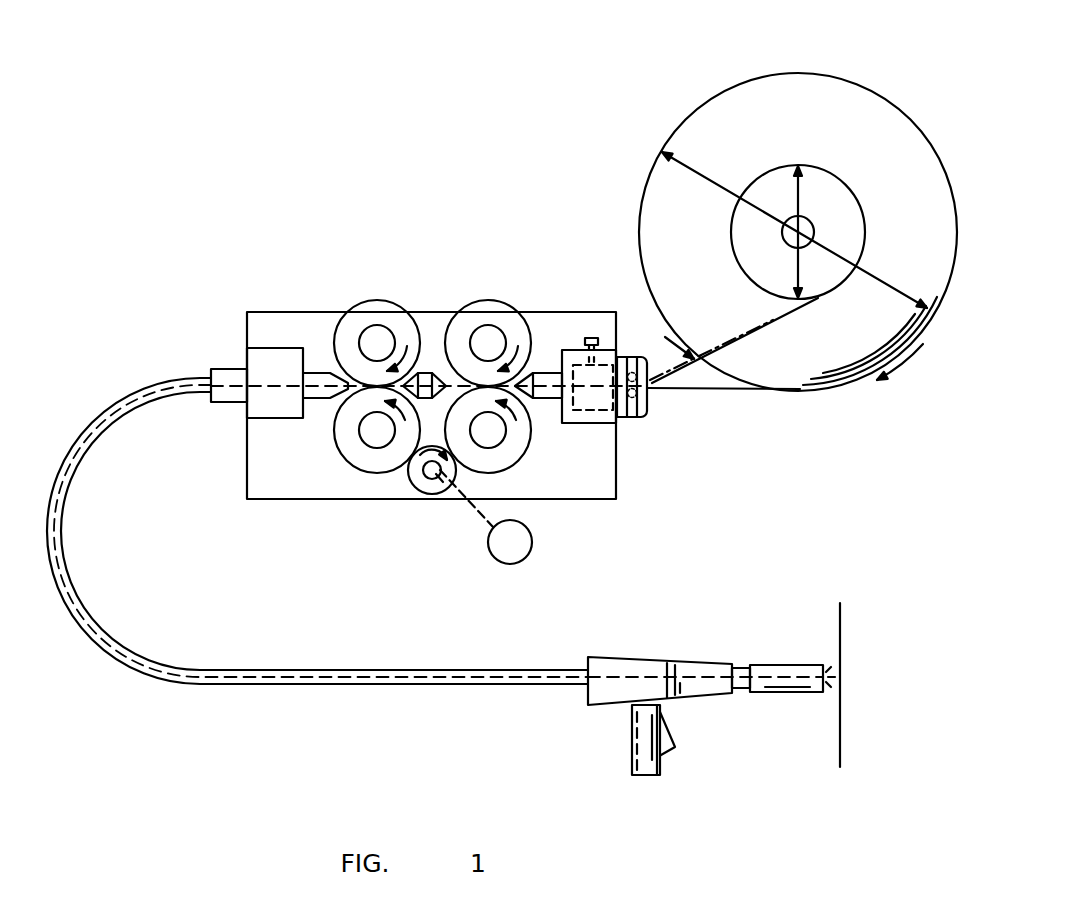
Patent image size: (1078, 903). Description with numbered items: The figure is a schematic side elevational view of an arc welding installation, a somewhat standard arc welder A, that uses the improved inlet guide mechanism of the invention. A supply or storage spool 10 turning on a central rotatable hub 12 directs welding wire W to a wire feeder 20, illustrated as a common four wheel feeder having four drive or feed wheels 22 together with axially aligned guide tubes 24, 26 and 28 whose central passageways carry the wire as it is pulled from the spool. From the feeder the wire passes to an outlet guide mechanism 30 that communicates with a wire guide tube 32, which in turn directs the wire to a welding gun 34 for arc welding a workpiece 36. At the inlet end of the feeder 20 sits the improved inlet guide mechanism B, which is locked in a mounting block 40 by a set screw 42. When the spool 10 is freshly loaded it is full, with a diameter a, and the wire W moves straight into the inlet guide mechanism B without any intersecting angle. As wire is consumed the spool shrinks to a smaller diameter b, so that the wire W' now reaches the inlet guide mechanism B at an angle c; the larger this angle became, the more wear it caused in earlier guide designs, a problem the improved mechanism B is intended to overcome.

The supply or storage spool 10 is at (831, 68).
The central rotatable hub 12 is at (812, 227).
The wire feeder 20 is at (445, 298).
The drive or feed wheels 22 is at (367, 308).
The guide tube 24 is at (545, 397).
The guide tube 26 is at (437, 370).
The guide tube 28 is at (320, 395).
The outlet guide mechanism 30 is at (172, 382).
The wire guide tube 32 is at (122, 647).
The welding gun 34 is at (678, 662).
The workpiece 36 is at (840, 632).
The mounting block 40 is at (595, 422).
The set screw 42 is at (591, 337).
The arc welder A is at (381, 131).
The inlet guide mechanism B is at (625, 355).
The welding wire W is at (723, 417).
The wire W' is at (748, 340).
The diameter a is at (880, 273).
The diameter b is at (797, 200).
The angle c is at (696, 394).